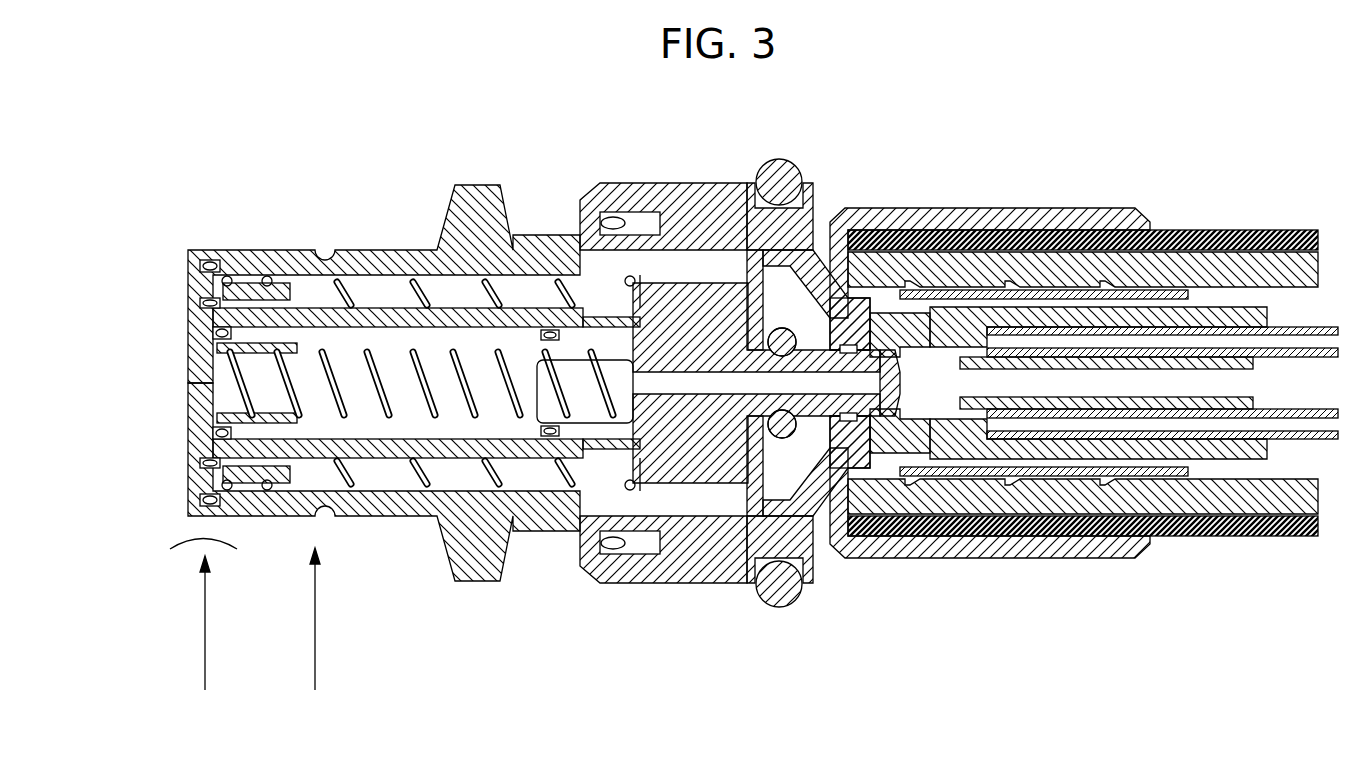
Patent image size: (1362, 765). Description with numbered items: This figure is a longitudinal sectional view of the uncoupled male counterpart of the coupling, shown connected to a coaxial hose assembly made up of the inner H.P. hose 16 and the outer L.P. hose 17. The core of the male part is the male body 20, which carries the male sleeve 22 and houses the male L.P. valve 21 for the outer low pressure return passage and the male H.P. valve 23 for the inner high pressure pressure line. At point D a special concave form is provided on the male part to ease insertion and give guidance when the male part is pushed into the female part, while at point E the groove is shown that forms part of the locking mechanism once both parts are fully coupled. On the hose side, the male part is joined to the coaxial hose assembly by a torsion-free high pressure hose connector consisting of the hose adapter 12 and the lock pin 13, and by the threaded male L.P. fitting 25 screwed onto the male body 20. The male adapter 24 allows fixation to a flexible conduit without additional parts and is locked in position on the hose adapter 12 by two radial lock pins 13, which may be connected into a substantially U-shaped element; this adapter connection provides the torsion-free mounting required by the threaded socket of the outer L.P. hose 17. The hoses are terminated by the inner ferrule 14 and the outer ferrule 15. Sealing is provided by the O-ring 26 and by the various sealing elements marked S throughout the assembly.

The hose adapter 12 is at (905, 440).
The lock pin 13 is at (830, 475).
The inner ferrule 14 is at (1020, 440).
The outer ferrule 15 is at (1095, 559).
The H.P. hose 16 is at (1200, 447).
The L.P. hose 17 is at (1265, 537).
The male body 20 is at (455, 215).
The male L.P. valve 21 is at (205, 283).
The male sleeve 22 is at (205, 310).
The male H.P. valve 23 is at (215, 395).
The male adapter 24 is at (605, 430).
The male L.P. fitting 25 is at (675, 575).
The O-ring 26 is at (780, 607).
The sealing element S is at (210, 258).
The concave form D is at (203, 633).
The groove E is at (313, 637).